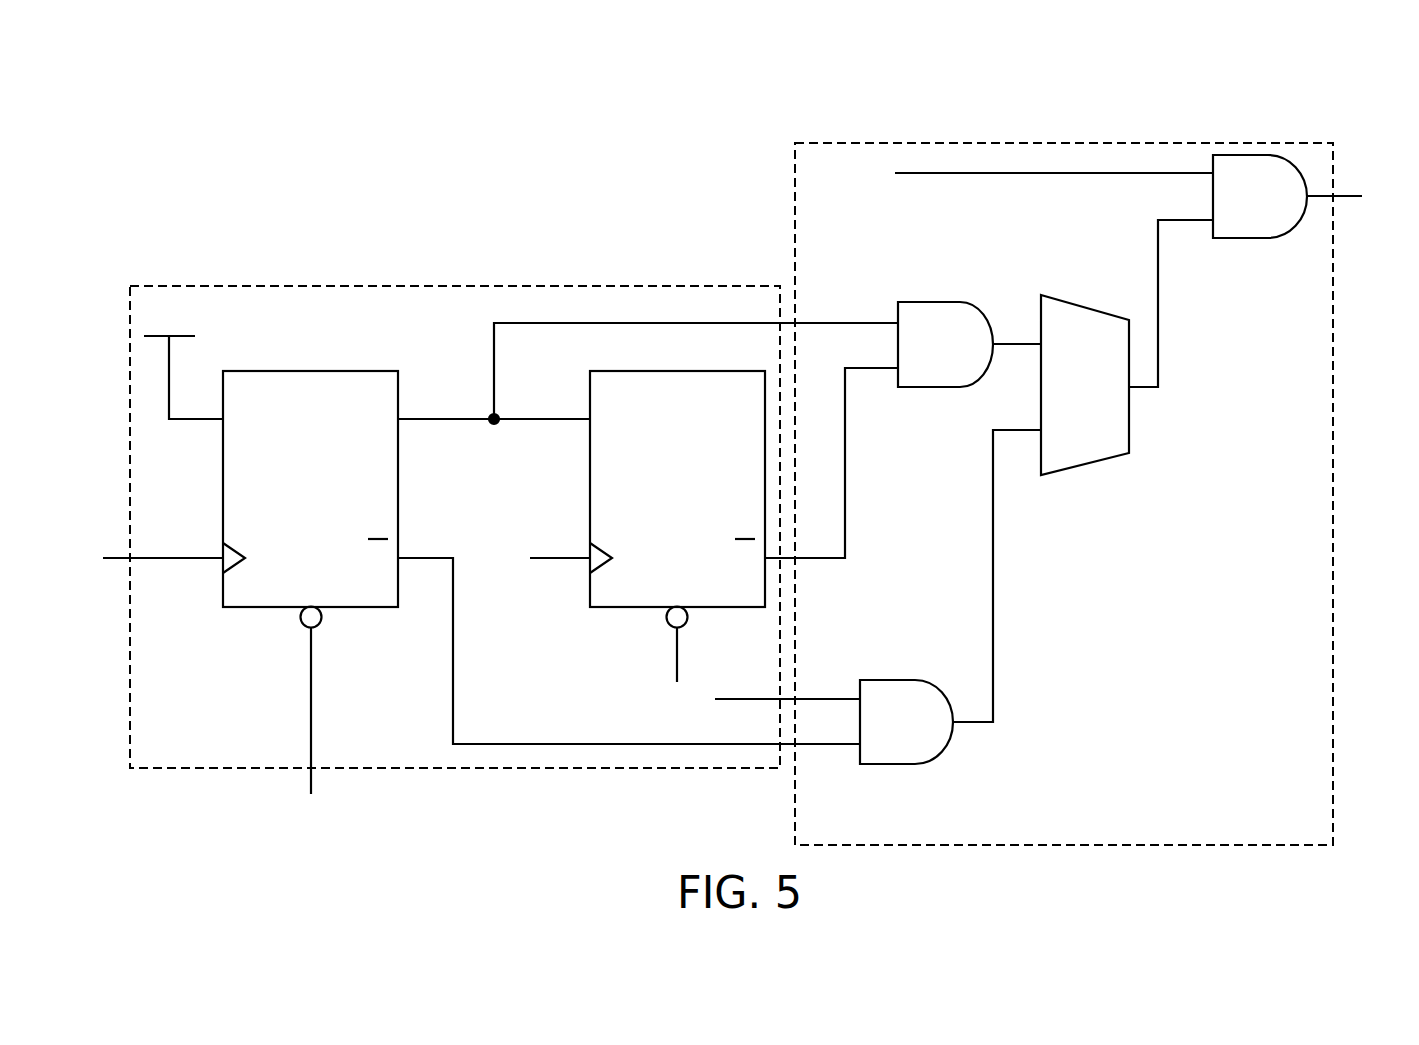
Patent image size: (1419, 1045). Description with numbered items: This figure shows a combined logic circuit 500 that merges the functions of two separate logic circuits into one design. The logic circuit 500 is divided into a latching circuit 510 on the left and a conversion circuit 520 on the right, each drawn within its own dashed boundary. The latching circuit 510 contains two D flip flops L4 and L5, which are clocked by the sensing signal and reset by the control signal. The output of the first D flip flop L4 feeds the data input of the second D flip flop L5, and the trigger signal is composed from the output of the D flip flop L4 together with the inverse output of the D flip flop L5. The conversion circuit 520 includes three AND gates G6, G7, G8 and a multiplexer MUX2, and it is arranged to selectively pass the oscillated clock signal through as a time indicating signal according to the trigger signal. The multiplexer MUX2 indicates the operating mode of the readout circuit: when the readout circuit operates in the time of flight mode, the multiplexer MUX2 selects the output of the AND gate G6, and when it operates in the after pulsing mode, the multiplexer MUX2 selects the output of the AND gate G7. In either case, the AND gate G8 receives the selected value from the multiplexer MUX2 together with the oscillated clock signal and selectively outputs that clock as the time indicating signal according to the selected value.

The logic circuit 500 is at (128, 105).
The latching circuit 510 is at (443, 286).
The conversion circuit 520 is at (1066, 143).
The D flip flop L4 is at (368, 608).
The D flip flop L5 is at (610, 608).
The AND gate G6 is at (887, 764).
The AND gate G7 is at (925, 387).
The AND gate G8 is at (1237, 238).
The multiplexer MUX2 is at (1085, 385).